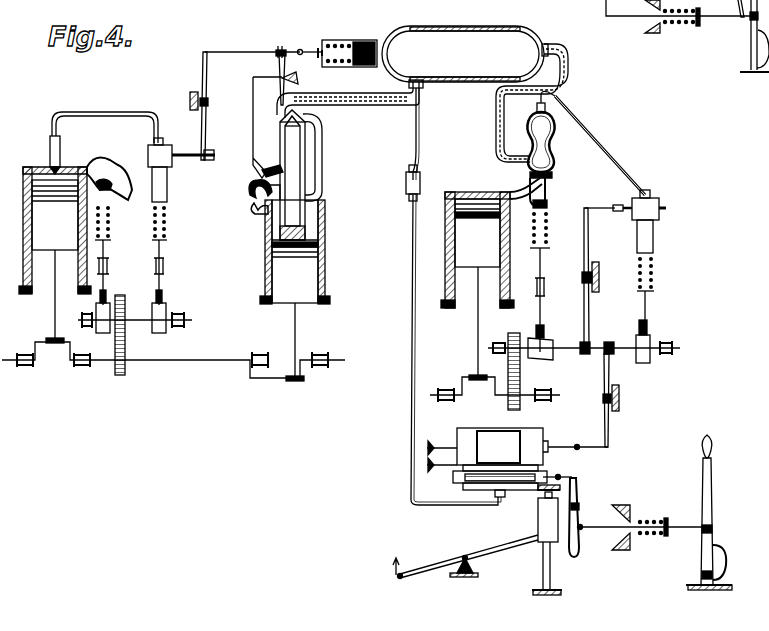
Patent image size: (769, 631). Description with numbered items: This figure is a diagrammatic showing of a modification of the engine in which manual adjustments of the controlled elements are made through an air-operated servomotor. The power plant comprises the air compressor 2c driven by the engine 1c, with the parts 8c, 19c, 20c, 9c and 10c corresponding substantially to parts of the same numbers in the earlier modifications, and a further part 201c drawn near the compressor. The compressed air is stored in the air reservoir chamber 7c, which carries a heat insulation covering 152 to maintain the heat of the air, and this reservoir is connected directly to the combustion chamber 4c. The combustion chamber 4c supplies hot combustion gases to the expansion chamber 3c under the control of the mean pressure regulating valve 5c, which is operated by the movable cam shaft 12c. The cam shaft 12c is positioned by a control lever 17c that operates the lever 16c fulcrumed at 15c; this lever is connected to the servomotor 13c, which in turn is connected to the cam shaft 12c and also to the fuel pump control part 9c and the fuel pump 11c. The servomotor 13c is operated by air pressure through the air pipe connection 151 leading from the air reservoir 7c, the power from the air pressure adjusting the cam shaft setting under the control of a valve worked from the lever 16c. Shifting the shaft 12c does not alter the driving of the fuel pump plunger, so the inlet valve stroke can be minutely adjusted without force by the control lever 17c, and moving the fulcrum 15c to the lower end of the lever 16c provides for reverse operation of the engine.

The engine 1c is at (75, 239).
The air compressor 2c is at (295, 245).
The expansion chamber 3c is at (491, 279).
The combustion chamber 4c is at (548, 124).
The mean pressure regulating valve 5c is at (548, 182).
The air reservoir chamber 7c is at (463, 54).
The corresponding part 8c is at (362, 52).
The fuel pump control part 9c is at (190, 160).
The corresponding part 10c is at (158, 155).
The fuel pump 11c is at (648, 208).
The movable cam shaft 12c is at (620, 350).
The servomotor 13c is at (499, 462).
The fulcrum 15c is at (578, 505).
The lever 16c is at (579, 545).
The control lever 17c is at (711, 492).
The corresponding part 19c is at (350, 97).
The corresponding part 20c is at (272, 212).
The valve rocker 201c is at (268, 170).
The air pipe connection 151 is at (411, 326).
The heat insulation covering 152 is at (485, 14).